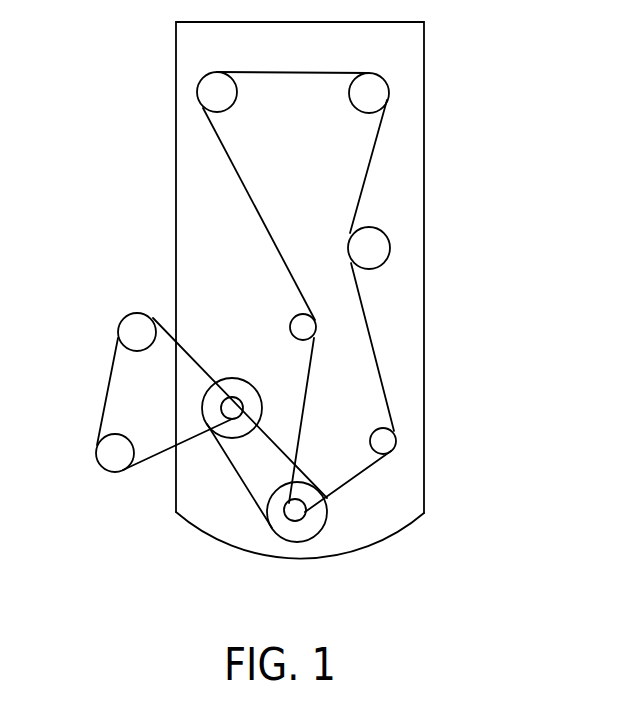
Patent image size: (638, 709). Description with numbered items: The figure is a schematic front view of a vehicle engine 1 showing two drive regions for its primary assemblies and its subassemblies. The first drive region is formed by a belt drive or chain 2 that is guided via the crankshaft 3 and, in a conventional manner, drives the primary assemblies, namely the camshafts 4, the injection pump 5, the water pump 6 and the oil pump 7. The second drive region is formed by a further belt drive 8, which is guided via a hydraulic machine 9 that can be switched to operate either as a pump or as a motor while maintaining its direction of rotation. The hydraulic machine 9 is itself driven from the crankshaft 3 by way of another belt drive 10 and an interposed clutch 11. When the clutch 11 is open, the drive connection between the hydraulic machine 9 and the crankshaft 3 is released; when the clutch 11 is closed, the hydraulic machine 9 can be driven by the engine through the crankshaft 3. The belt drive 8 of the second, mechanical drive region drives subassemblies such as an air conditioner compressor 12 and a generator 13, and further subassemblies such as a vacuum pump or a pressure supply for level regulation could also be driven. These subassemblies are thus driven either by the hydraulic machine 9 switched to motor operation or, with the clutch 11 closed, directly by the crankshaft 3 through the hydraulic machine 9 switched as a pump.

The engine 1 is at (410, 50).
The belt drive or chain 2 is at (373, 153).
The crankshaft 3 is at (302, 522).
The camshafts 4 is at (205, 87).
The injection pump 5 is at (380, 250).
The water pump 6 is at (300, 322).
The oil pump 7 is at (386, 443).
The belt drive 8 is at (104, 388).
The hydraulic machine 9 is at (238, 428).
The belt drive 10 is at (240, 479).
The clutch 11 is at (285, 530).
The air conditioner compressor 12 is at (131, 320).
The generator 13 is at (116, 462).